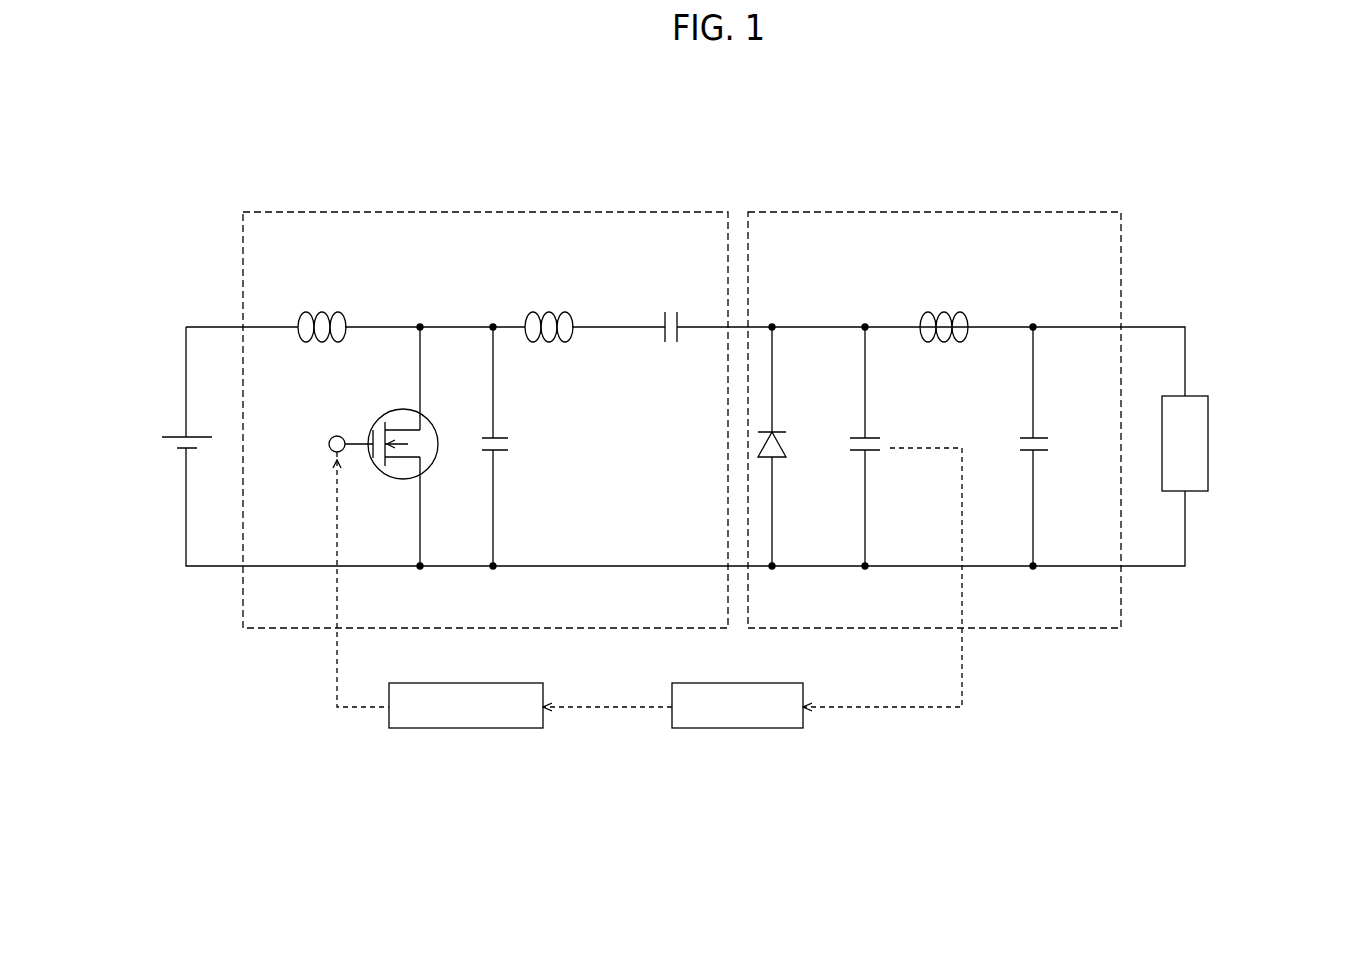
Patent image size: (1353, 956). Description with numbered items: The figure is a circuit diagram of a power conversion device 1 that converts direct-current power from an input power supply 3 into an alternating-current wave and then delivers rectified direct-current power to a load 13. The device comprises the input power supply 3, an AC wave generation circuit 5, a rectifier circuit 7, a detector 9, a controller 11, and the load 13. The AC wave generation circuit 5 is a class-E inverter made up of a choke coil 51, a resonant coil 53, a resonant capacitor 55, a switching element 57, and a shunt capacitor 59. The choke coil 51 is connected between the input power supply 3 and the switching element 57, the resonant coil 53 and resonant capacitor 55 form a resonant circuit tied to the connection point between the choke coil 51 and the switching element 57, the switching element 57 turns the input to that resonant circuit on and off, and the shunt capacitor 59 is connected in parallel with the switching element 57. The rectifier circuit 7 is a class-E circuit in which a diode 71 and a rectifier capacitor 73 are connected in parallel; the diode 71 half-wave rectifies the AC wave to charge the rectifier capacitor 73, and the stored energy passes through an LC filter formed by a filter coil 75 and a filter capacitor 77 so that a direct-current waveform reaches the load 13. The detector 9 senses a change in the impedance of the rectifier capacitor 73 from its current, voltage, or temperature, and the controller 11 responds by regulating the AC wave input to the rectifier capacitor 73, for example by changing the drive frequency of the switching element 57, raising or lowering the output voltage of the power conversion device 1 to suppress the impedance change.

The power conversion device 1 is at (727, 152).
The input power supply 3 is at (171, 437).
The AC wave generation circuit 5 is at (542, 211).
The rectifier circuit 7 is at (916, 211).
The detector 9 is at (748, 681).
The controller 11 is at (465, 681).
The load 13 is at (1210, 443).
The choke coil 51 is at (345, 321).
The resonant coil 53 is at (572, 321).
The resonant capacitor 55 is at (665, 344).
The switching element 57 is at (391, 413).
The shunt capacitor 59 is at (500, 438).
The diode 71 is at (779, 432).
The rectifier capacitor 73 is at (872, 438).
The filter coil 75 is at (968, 321).
The filter capacitor 77 is at (1040, 438).